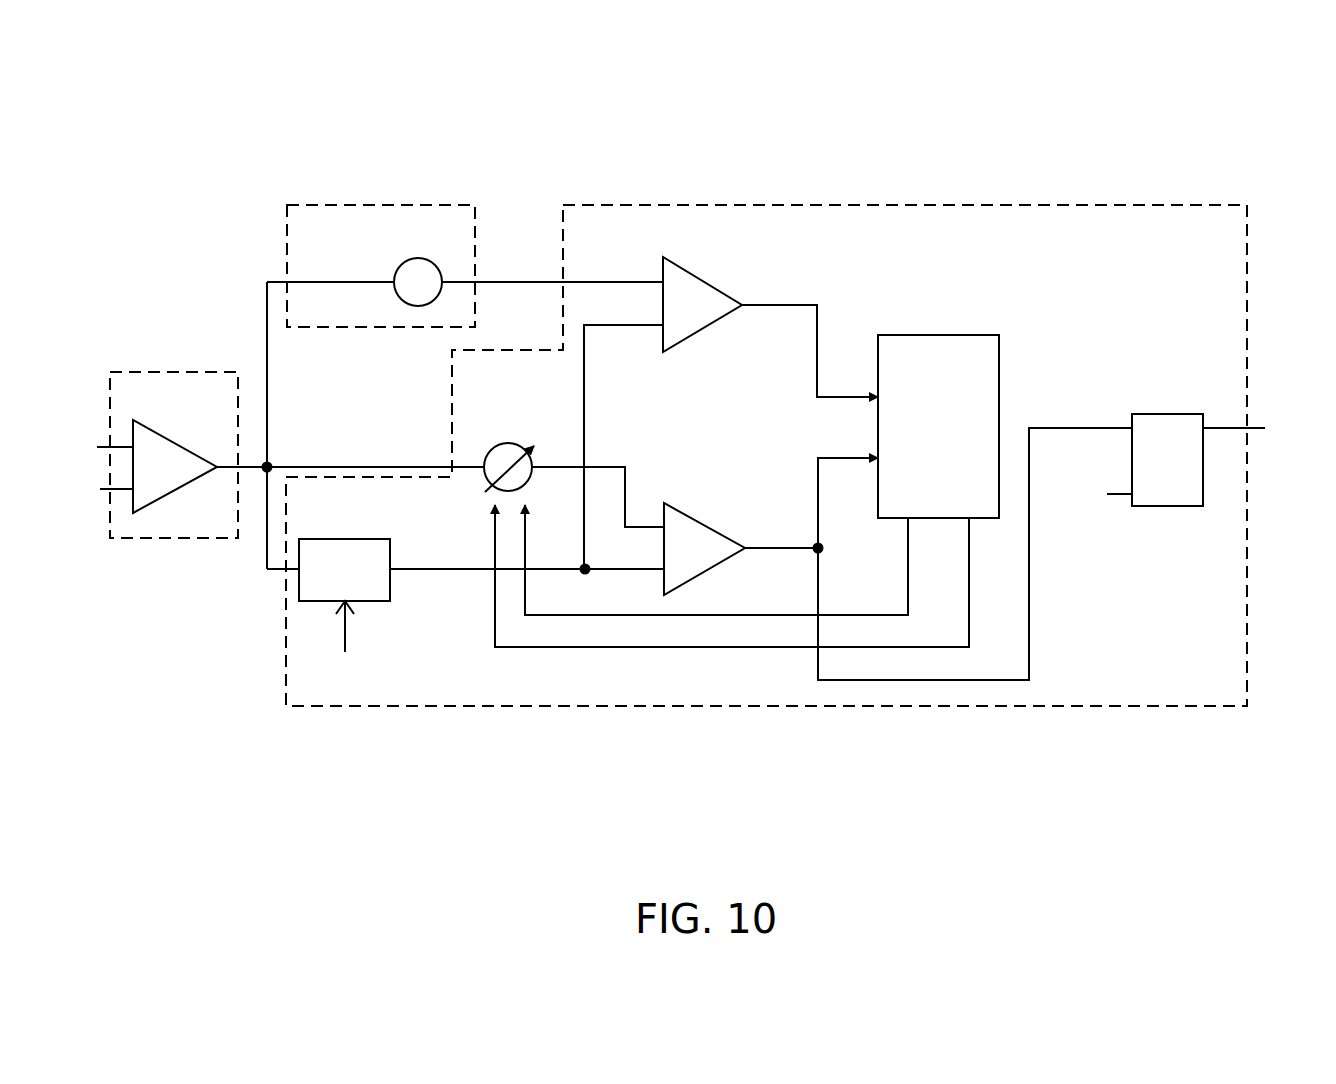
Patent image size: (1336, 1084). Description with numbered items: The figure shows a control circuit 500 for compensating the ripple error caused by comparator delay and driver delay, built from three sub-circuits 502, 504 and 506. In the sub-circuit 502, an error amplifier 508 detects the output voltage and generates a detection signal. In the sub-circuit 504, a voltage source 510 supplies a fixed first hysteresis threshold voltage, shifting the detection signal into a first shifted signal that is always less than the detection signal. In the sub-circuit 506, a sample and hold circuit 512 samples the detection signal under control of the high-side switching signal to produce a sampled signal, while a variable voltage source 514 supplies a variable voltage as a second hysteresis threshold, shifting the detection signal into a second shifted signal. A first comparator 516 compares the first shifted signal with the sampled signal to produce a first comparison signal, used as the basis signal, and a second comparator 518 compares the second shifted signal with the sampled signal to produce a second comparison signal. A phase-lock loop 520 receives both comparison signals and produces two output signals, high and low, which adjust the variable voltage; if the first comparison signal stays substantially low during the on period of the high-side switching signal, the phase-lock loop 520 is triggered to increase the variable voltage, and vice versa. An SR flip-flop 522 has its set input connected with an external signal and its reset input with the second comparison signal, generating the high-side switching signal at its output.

The control circuit 500 is at (1258, 128).
The sub-circuit 502 is at (170, 372).
The sub-circuit 504 is at (377, 205).
The sub-circuit 506 is at (900, 205).
The error amplifier 508 is at (176, 440).
The voltage source 510 is at (398, 268).
The sample and hold circuit 512 is at (340, 539).
The variable voltage source 514 is at (530, 450).
The first comparator 516 is at (700, 275).
The second comparator 518 is at (705, 520).
The phase-lock loop 520 is at (932, 335).
The SR flip-flop 522 is at (1163, 414).